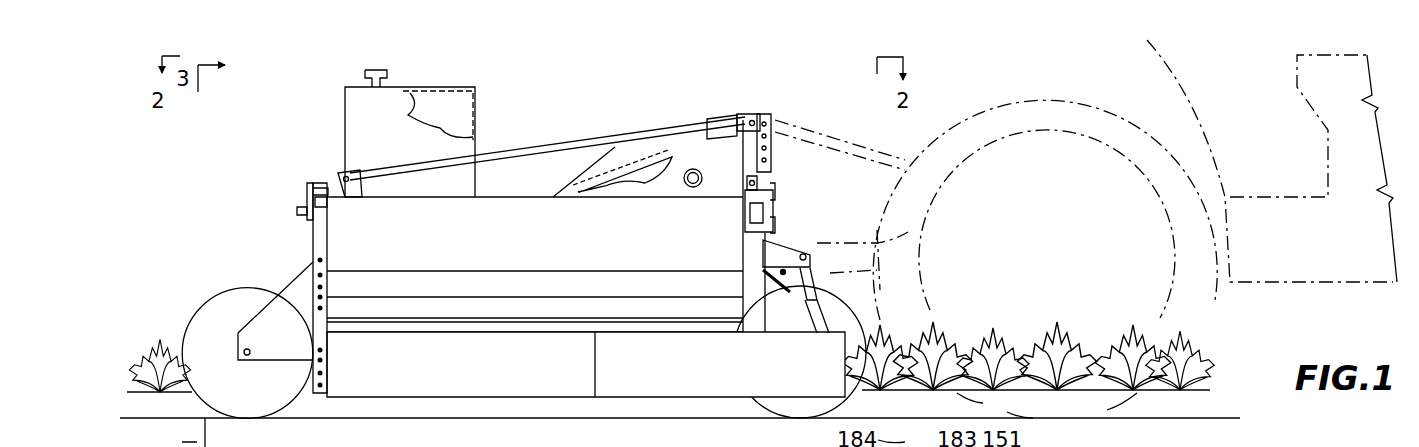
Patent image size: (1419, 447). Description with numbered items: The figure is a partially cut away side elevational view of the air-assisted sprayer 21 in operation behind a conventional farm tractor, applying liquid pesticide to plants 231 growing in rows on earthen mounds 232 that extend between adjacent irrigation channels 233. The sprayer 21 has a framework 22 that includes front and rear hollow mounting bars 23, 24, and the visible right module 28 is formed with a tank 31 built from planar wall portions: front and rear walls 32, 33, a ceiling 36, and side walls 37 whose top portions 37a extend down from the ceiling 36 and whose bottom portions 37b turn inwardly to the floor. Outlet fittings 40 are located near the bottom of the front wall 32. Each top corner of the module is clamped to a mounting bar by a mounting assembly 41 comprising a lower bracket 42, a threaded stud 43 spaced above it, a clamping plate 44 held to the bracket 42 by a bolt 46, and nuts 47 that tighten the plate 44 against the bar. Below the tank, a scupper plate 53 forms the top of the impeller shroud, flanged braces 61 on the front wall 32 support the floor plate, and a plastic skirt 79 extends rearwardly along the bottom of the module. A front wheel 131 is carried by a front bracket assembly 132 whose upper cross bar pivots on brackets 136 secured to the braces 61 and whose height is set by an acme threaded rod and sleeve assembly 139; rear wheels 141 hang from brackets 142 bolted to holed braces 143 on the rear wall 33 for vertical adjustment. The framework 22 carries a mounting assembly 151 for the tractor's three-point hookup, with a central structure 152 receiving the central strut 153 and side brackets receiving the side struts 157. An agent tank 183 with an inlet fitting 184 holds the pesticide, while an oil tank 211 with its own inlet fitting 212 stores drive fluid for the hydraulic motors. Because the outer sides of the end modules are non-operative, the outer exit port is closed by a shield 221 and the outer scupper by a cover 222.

The sprayer 21 is at (815, 103).
The framework 22 is at (655, 133).
The front mounting bar 23 is at (770, 210).
The rear mounting bar 24 is at (318, 187).
The right module 28 is at (548, 190).
The tank 31 is at (313, 233).
The front wall 32 is at (780, 237).
The rear wall 33 is at (313, 250).
The ceiling 36 is at (497, 197).
The side walls 37 is at (340, 212).
The top portions 37a is at (467, 207).
The bottom portions 37b is at (333, 282).
The outlet fittings 40 is at (764, 310).
The mounting assembly 41 is at (304, 188).
The lower bracket 42 is at (327, 220).
The threaded stud 43 is at (747, 212).
The clamping plate 44 is at (307, 189).
The bolt 46 is at (300, 211).
The nuts 47 is at (306, 185).
The scupper plate 53 is at (357, 327).
The flanged braces 61 is at (767, 327).
The skirt 79 is at (437, 400).
The front wheel 131 is at (800, 410).
The front bracket assembly 132 is at (831, 294).
The brackets 136 is at (747, 285).
The acme threaded rod and sleeve assembly 139 is at (870, 268).
The rear wheels 141 is at (287, 397).
The brackets 142 is at (273, 353).
The braces 143 is at (317, 313).
The mounting assembly 151 is at (769, 110).
The central structure 152 is at (744, 112).
The central strut 153 is at (893, 152).
The side struts 157 is at (908, 232).
The agent tank 183 is at (458, 86).
The inlet fitting 184 is at (383, 66).
The tank 211 is at (637, 190).
The inlet fitting 212 is at (718, 112).
The shields 221 is at (612, 387).
The covers 222 is at (477, 310).
The plants 231 is at (1177, 340).
The earthen mounds 232 is at (1202, 388).
The irrigation channels 233 is at (1207, 417).